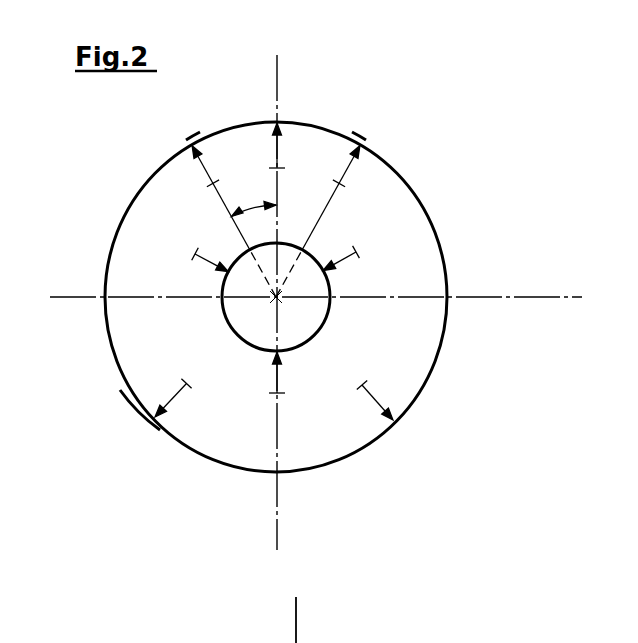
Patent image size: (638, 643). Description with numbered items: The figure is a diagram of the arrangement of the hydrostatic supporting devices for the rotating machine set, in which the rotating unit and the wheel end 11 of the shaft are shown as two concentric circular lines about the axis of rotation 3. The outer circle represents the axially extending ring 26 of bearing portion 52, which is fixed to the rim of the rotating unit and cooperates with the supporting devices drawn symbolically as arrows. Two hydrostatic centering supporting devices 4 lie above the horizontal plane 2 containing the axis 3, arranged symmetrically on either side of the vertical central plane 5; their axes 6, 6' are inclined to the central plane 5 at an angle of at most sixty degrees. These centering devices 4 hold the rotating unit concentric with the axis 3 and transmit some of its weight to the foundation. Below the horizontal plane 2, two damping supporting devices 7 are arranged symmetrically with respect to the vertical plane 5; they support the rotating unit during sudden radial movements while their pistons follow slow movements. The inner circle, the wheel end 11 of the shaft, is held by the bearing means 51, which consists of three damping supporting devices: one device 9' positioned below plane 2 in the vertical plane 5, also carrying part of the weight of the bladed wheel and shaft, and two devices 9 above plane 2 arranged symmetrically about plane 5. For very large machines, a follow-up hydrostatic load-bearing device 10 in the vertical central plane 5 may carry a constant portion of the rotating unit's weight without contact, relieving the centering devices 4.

The horizontal plane 2 is at (91, 296).
The axis of rotation 3 is at (274, 302).
The hydrostatic centering supporting devices 4 is at (200, 171).
The vertical central plane 5 is at (279, 86).
The axis of centering supporting device 6 is at (319, 221).
The axis of centering supporting device 6' is at (232, 221).
The hydrostatic damping supporting devices 7 is at (176, 394).
The hydrostatic damping supporting devices 9 is at (281, 269).
The hydrostatic damping supporting device 9' is at (296, 374).
The follow-up hydrostatic load-bearing device 10 is at (288, 145).
The wheel end of shaft 11 is at (324, 321).
The axially extending ring 26 is at (447, 262).
The bearing means 51 is at (220, 318).
The bearing portion 52 is at (134, 396).